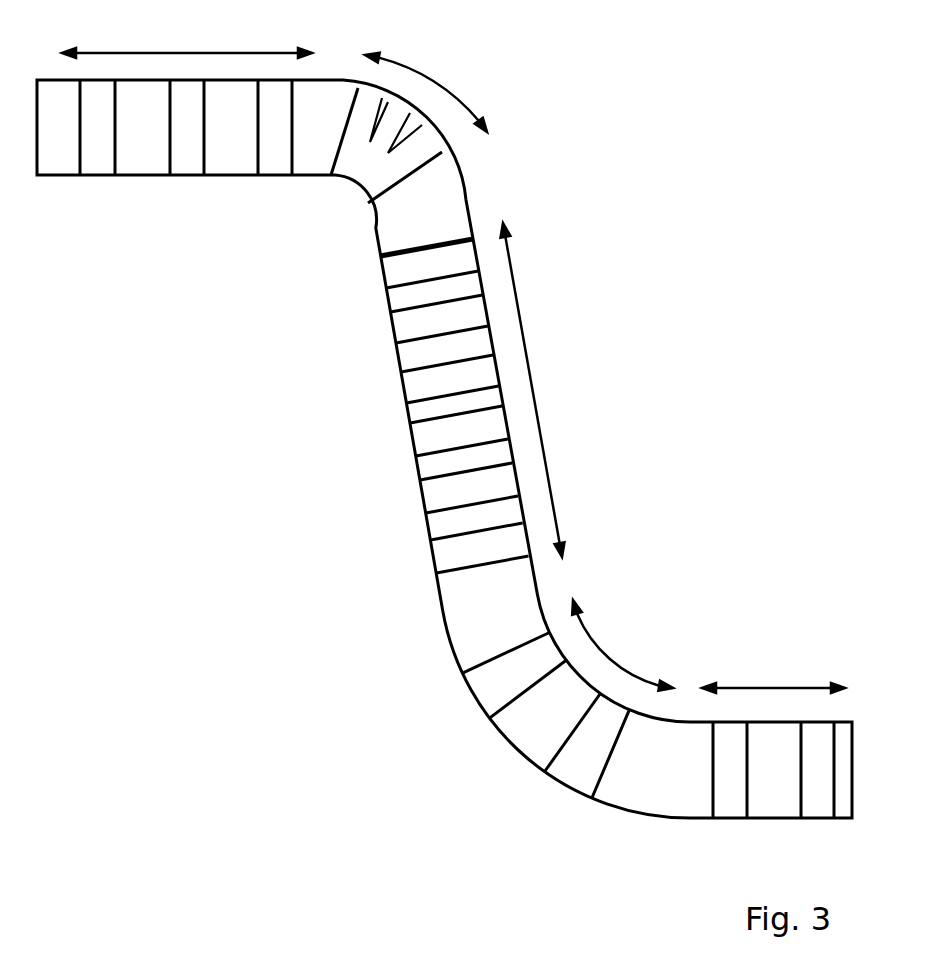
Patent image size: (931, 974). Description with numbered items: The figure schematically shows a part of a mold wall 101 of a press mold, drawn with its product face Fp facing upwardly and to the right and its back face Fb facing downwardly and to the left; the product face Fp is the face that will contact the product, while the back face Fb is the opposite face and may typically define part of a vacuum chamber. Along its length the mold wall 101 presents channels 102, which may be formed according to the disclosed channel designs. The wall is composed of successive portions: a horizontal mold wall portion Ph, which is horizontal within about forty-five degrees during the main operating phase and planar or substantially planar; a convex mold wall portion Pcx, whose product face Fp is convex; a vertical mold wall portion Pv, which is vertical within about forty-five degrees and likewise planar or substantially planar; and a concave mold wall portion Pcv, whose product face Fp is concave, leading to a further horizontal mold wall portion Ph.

The mold wall 101 is at (637, 785).
The channels 102 is at (93, 172).
The horizontal mold wall portion Ph is at (453, 355).
The vertical mold wall portion Pv is at (541, 390).
The convex mold wall portion Pcx is at (426, 92).
The concave mold wall portion Pcv is at (622, 645).
The product face Fp is at (479, 182).
The back face Fb is at (359, 236).